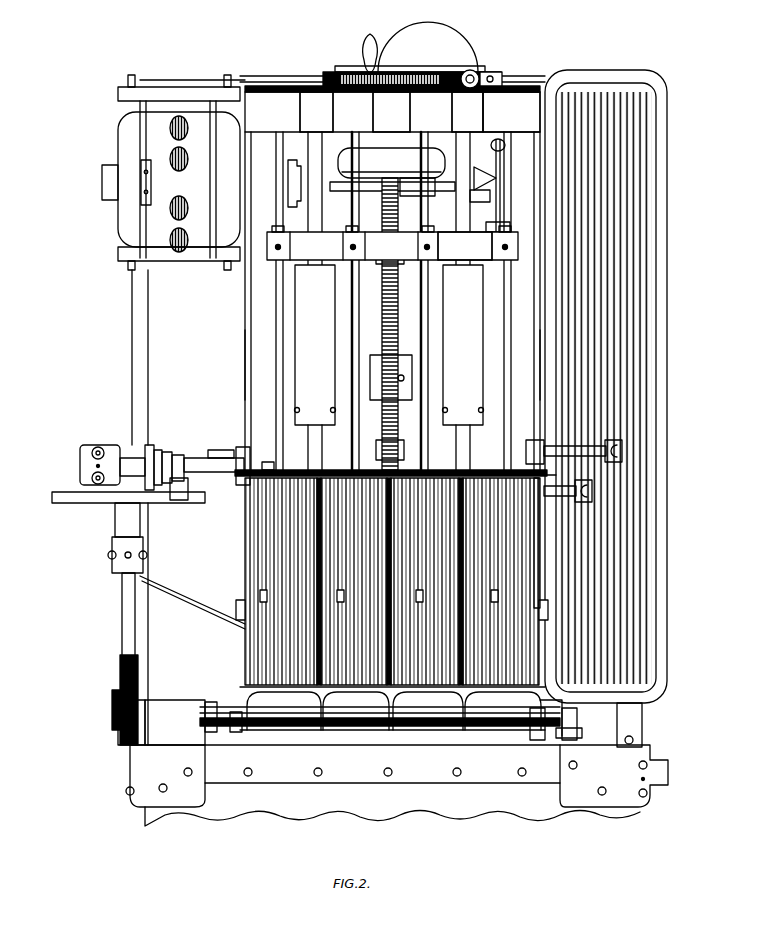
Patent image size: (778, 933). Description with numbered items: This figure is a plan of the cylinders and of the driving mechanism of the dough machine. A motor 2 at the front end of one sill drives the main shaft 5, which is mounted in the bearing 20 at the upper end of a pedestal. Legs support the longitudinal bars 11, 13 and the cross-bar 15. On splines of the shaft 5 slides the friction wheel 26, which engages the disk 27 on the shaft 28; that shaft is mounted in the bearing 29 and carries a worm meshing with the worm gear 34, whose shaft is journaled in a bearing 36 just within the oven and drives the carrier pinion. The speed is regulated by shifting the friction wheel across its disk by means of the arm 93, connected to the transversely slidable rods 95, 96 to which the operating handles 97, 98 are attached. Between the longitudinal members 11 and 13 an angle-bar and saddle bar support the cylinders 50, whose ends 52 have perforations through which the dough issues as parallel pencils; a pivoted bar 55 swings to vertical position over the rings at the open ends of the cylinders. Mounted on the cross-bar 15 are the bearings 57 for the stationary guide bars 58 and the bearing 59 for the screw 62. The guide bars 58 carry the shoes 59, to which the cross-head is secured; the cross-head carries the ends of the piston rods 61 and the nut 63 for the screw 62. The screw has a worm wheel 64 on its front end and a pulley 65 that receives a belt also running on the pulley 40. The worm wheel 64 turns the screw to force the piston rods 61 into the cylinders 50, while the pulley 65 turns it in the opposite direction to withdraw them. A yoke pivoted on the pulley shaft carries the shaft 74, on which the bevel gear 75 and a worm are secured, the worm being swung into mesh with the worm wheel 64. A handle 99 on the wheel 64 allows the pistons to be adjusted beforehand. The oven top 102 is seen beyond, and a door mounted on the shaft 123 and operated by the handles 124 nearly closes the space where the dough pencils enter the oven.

The motor 2 is at (173, 172).
The main shaft 5 is at (192, 462).
The longitudinal bar 11 is at (256, 365).
The longitudinal bar 13 is at (528, 365).
The cross-bar 15 is at (511, 112).
The bearing 20 is at (100, 454).
The friction wheel 26 is at (152, 450).
The disk 27 is at (64, 503).
The shaft 28 is at (124, 615).
The bearing 29 is at (120, 545).
The worm gear 34 is at (120, 668).
The bearing 36 is at (161, 722).
The pulley 40 is at (465, 246).
The cylinders 50 is at (392, 581).
The cylinder ends 52 is at (392, 708).
The pivoted bar 55 is at (284, 474).
The bearings 57 is at (391, 112).
The stationary guide bars 58 is at (463, 213).
The shoes 59 is at (389, 282).
The piston rods 61 is at (276, 312).
The screw 62 is at (383, 313).
The nut 63 is at (386, 264).
The worm wheel 64 is at (336, 74).
The pulley 65 is at (392, 172).
The shaft 74 is at (474, 70).
The bevel gear 75 is at (428, 47).
The arm 93 is at (178, 490).
The transversely slidable rod 95 is at (534, 510).
The transversely slidable rod 96 is at (562, 448).
The operating handle 97 is at (592, 491).
The operating handle 98 is at (622, 450).
The handle 99 is at (365, 44).
The oven top 102 is at (397, 785).
The shaft 123 is at (360, 724).
The handles 124 is at (590, 717).